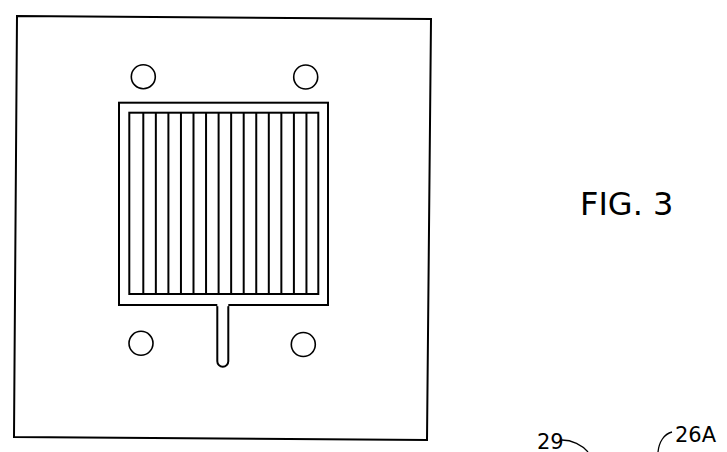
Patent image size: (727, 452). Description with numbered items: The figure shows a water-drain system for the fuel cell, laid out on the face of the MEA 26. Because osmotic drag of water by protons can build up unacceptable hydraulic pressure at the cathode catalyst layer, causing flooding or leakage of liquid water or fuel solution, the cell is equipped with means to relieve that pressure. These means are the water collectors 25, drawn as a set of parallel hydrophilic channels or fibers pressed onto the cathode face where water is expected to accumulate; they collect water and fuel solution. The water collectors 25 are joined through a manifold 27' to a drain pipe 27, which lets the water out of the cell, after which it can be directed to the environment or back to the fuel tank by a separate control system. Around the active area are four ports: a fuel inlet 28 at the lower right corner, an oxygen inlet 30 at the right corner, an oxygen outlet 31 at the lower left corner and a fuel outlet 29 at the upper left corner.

The water collectors 25 is at (199, 288).
The MEA 26 is at (397, 208).
The drain pipe 27 is at (255, 358).
The manifold 27' is at (269, 204).
The fuel inlet 28 is at (304, 344).
The fuel outlet 29 is at (144, 75).
The oxygen inlet 30 is at (306, 77).
The oxygen outlet 31 is at (142, 344).